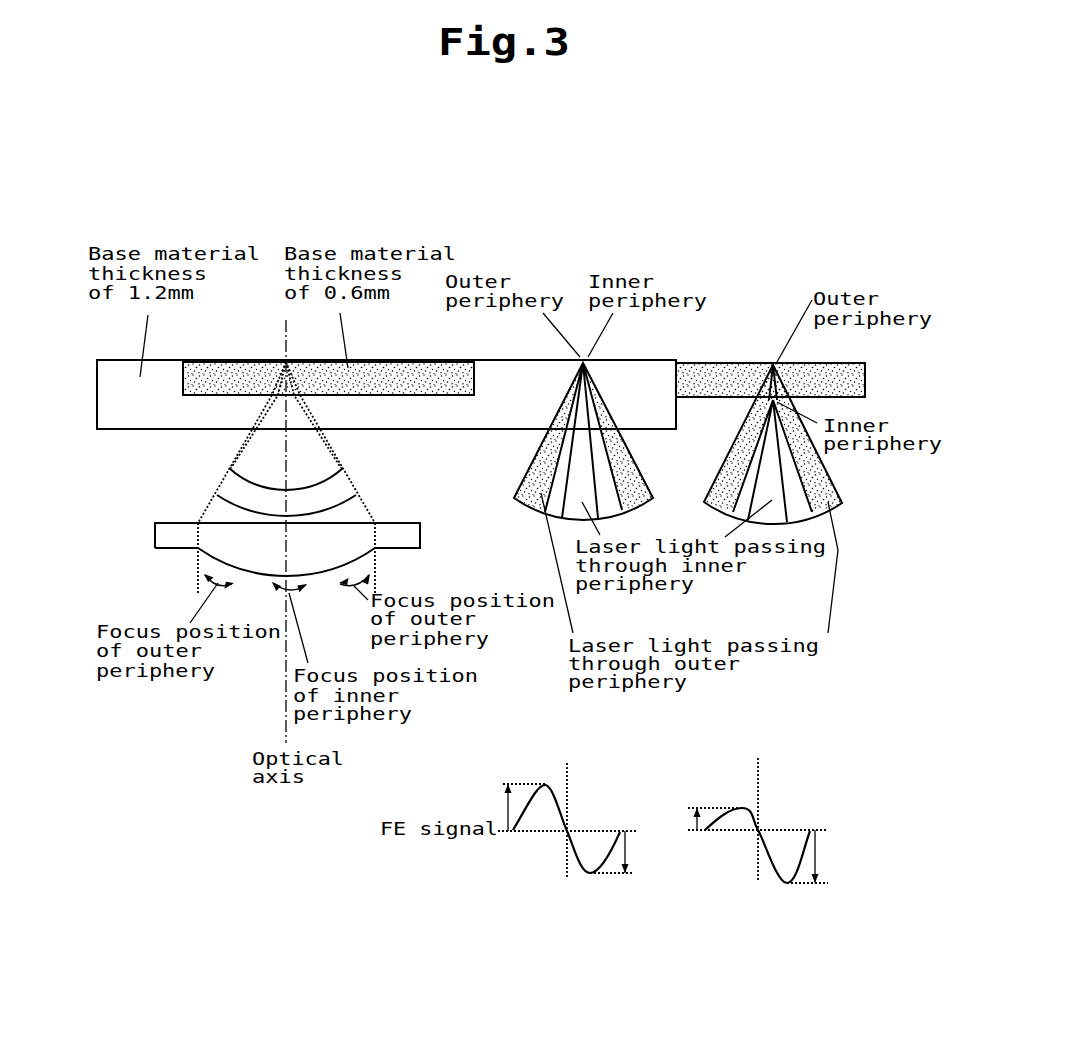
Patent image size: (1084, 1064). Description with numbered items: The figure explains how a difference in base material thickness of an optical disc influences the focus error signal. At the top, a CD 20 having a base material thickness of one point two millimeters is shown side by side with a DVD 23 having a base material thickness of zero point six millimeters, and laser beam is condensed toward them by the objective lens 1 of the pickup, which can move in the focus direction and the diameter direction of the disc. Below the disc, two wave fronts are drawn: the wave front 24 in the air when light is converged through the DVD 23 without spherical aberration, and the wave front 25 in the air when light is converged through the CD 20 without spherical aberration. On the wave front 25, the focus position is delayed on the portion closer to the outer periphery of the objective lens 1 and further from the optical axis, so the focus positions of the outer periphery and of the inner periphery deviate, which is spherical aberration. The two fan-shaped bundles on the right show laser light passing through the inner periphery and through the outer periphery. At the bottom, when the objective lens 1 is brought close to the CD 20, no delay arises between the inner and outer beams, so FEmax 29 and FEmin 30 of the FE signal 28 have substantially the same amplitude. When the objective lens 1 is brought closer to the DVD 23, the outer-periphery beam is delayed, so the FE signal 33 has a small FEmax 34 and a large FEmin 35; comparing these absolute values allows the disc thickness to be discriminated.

The CD 20 is at (113, 373).
The DVD 23 is at (246, 365).
The wave front 24 is at (245, 477).
The wave front 25 is at (333, 503).
The objective lens 1 is at (160, 523).
The FE signal 28 is at (543, 784).
The FEmax 29 is at (467, 807).
The FEmin 30 is at (641, 867).
The FE signal 33 is at (728, 808).
The FEmax 34 is at (660, 805).
The FEmin 35 is at (856, 856).